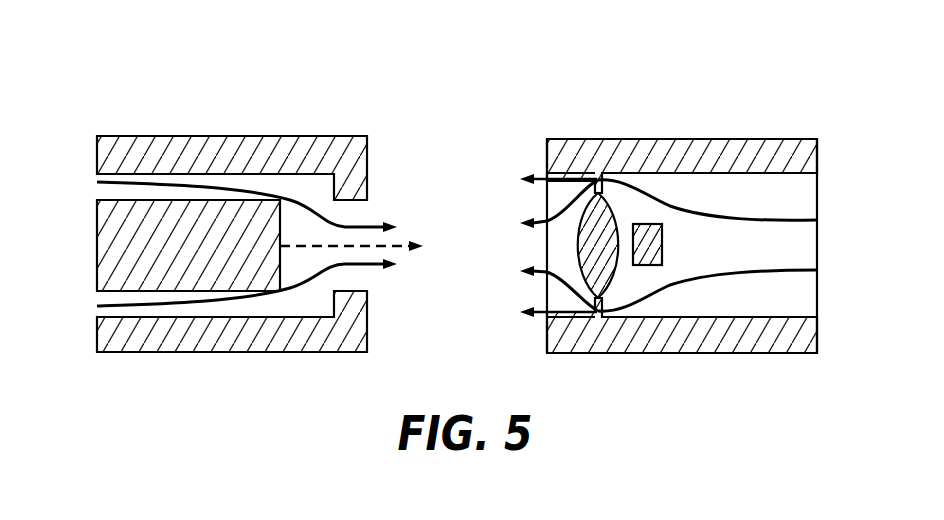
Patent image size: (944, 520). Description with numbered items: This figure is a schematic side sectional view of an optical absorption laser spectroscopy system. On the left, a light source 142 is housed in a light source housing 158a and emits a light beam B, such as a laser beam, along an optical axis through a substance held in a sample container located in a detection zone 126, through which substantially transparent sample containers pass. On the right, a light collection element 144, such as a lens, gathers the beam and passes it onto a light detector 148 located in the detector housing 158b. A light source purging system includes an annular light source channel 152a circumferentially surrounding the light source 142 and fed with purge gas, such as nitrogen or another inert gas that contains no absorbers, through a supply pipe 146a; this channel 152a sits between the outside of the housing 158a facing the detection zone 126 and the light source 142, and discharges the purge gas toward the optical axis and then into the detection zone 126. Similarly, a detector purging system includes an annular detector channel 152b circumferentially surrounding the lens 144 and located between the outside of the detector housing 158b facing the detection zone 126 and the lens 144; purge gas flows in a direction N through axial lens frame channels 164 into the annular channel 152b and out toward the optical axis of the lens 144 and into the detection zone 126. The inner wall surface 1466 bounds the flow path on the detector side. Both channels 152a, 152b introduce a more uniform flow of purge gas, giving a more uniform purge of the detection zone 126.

The detection zone 126 is at (478, 186).
The light source 142 is at (112, 279).
The light collection element 144 is at (609, 204).
The supply pipe 146a is at (103, 180).
The light detector 148 is at (647, 265).
The annular light source channel 152a is at (360, 197).
The annular detector channel 152b is at (550, 174).
The light source housing 158a is at (340, 341).
The detector housing 158b is at (773, 346).
The axial lens frame channel 164 is at (567, 318).
The inner wall surface 1466 is at (789, 194).
The direction of purge gas flow N is at (184, 186).
The beam axis B is at (397, 246).